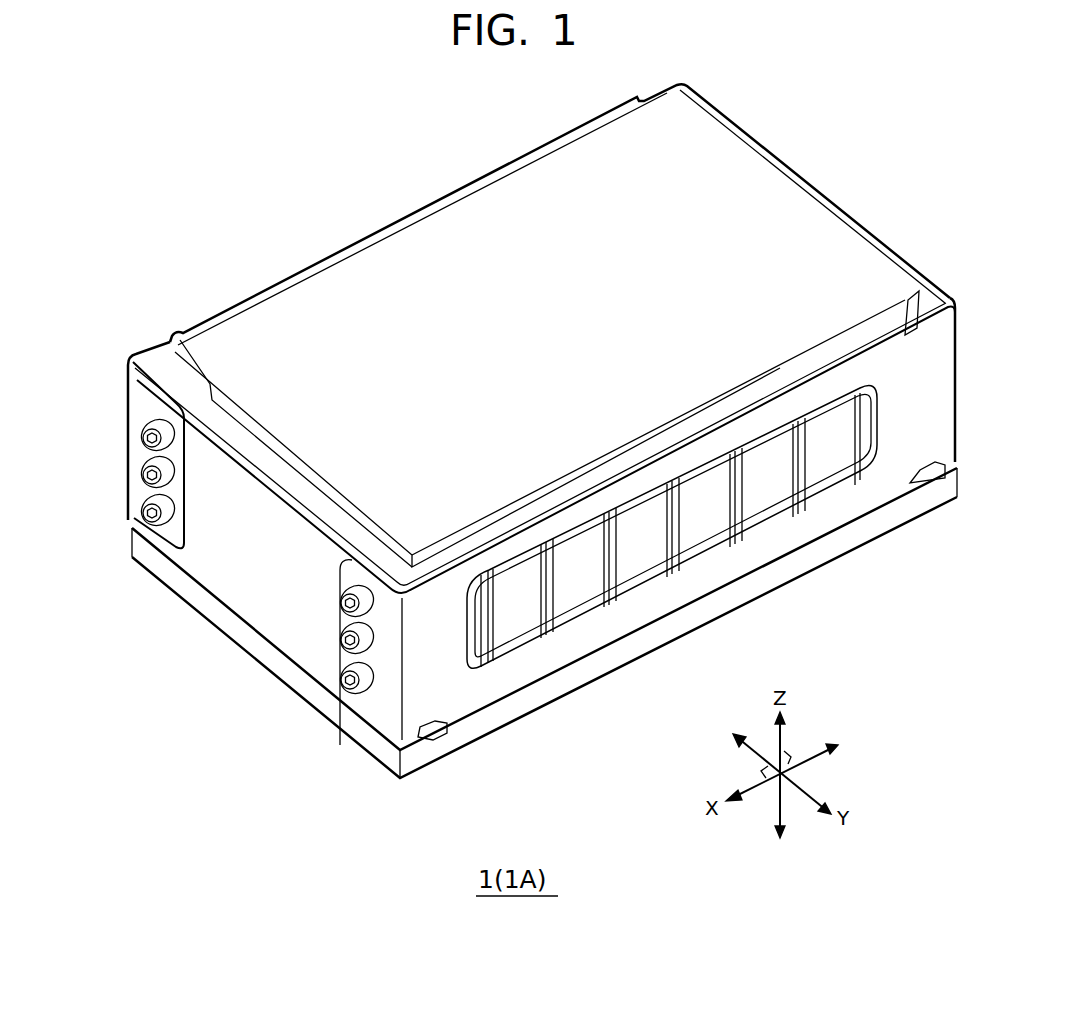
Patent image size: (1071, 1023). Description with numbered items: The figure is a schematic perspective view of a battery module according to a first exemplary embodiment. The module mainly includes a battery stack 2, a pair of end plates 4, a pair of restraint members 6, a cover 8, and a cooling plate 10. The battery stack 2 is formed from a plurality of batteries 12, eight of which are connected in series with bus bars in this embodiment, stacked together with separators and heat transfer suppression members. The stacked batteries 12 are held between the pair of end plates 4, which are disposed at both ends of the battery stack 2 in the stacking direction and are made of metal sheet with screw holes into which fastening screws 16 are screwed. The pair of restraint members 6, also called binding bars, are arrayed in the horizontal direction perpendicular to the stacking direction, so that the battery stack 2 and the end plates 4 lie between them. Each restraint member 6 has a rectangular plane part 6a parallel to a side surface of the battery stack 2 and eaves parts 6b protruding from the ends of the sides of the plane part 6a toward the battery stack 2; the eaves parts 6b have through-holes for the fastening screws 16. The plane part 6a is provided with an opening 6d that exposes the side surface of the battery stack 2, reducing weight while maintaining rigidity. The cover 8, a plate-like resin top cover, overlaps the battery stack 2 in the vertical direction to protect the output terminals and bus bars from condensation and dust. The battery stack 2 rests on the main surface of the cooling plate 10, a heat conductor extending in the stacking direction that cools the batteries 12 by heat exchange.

The battery stack 2 is at (760, 477).
The end plate 4 is at (800, 180).
The restraint member 6 is at (128, 438).
The plane part 6a is at (840, 513).
The eaves part 6b is at (879, 323).
The opening 6d is at (880, 463).
The cover 8 is at (542, 176).
The cooling plate 10 is at (125, 545).
The battery 12 is at (515, 632).
The fastening screw 16 is at (365, 690).